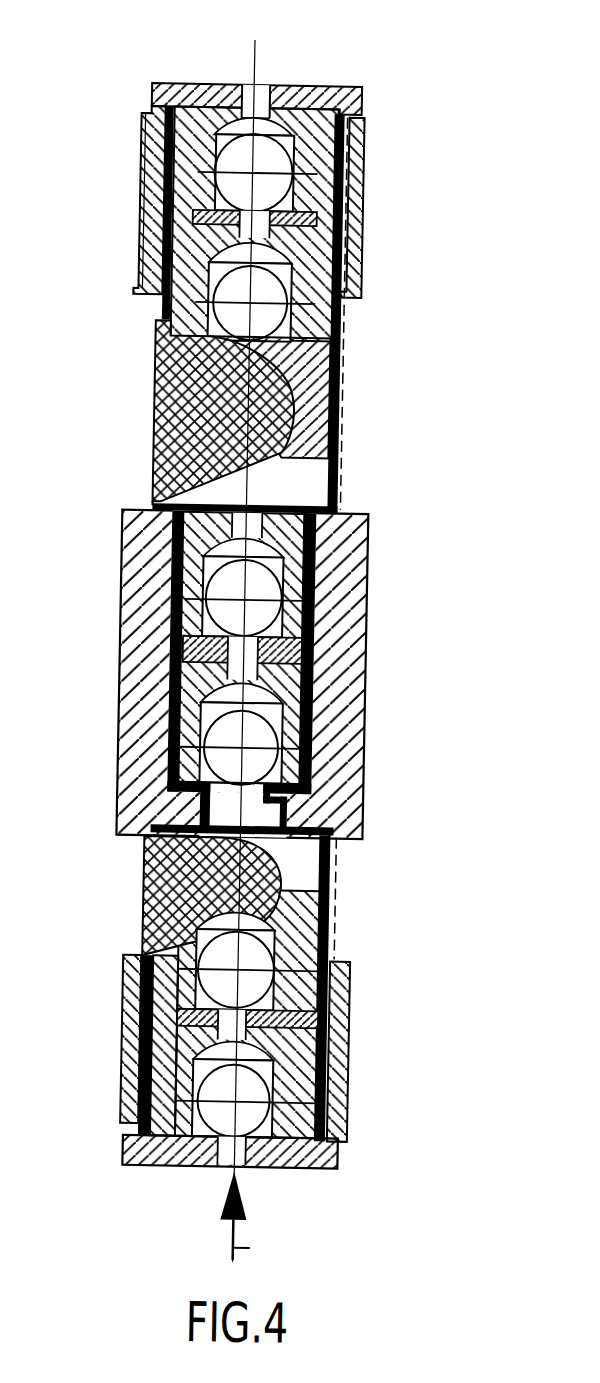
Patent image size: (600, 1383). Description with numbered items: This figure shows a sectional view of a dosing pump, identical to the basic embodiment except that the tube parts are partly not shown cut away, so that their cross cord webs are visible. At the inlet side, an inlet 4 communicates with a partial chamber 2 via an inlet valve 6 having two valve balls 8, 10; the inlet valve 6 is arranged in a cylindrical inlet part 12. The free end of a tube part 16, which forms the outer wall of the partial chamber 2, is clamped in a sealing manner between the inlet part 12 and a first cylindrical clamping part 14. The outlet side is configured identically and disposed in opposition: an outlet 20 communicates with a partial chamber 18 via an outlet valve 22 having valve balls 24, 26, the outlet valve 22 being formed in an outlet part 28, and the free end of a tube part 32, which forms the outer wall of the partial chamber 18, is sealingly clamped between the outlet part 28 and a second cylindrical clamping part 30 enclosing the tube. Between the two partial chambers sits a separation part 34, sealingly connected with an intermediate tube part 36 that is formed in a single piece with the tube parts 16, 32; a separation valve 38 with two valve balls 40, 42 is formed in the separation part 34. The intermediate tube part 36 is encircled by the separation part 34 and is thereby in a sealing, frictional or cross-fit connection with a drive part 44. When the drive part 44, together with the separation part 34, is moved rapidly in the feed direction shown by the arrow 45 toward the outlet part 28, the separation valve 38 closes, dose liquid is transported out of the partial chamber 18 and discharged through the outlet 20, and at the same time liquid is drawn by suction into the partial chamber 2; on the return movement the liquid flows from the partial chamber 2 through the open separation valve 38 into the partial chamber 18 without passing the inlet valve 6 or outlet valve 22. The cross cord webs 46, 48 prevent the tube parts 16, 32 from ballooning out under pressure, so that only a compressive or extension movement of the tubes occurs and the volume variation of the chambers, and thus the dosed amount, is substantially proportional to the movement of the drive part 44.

The partial chamber 2 is at (323, 883).
The inlet 4 is at (258, 1170).
The inlet valve 6 is at (350, 1115).
The valve ball 8 is at (338, 940).
The valve ball 10 is at (272, 1108).
The inlet part 12 is at (355, 1155).
The first cylindrical clamping part 14 is at (346, 1010).
The tube part 16 is at (340, 964).
The partial chamber 18 is at (320, 480).
The outlet 20 is at (259, 84).
The outlet valve 22 is at (336, 145).
The valve ball 24 is at (338, 232).
The valve ball 26 is at (276, 319).
The outlet part 28 is at (330, 89).
The second cylindrical clamping part 30 is at (275, 187).
The tube part 32 is at (349, 371).
The separation part 34 is at (326, 688).
The intermediate tube part 36 is at (275, 630).
The separation valve 38 is at (345, 562).
The valve ball 40 is at (302, 640).
The valve ball 42 is at (275, 776).
The drive part 44 is at (312, 759).
The arrow 45 is at (266, 1253).
The cross cord web 46 is at (163, 422).
The cross cord web 48 is at (160, 935).